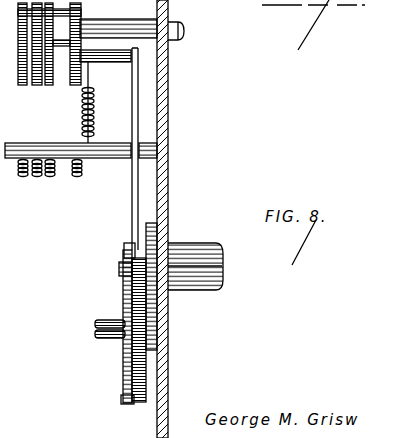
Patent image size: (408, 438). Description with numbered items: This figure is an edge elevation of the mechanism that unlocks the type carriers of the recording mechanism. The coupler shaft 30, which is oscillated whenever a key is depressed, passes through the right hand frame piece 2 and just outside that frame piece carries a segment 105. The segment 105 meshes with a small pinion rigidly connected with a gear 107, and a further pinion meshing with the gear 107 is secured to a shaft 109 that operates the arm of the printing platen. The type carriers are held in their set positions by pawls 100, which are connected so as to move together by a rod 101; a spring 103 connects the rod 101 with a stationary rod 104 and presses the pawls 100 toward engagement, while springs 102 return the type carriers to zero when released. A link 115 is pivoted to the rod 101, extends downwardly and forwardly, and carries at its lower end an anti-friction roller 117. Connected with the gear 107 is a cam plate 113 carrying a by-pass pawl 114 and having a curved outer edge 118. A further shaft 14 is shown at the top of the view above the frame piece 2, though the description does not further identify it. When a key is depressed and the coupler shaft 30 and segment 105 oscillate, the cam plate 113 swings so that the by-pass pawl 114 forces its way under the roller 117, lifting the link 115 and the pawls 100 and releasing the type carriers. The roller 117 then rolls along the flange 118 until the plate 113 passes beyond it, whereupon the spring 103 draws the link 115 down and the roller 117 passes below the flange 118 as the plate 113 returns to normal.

The right hand frame piece 2 is at (168, 115).
The shaft 14 is at (112, 19).
The coupler shaft 30 is at (203, 245).
The pawls 100 is at (48, 98).
The rod 101 is at (94, 62).
The springs 102 is at (22, 177).
The spring 103 is at (82, 115).
The stationary rod 104 is at (65, 143).
The segment 105 is at (157, 232).
The gear 107 is at (140, 396).
The shaft 109 is at (95, 332).
The cam plate 113 is at (121, 401).
The by-pass pawl 114 is at (124, 248).
The link 115 is at (132, 192).
The anti-friction roller 117 is at (119, 268).
The curved outer edge 118 is at (128, 408).